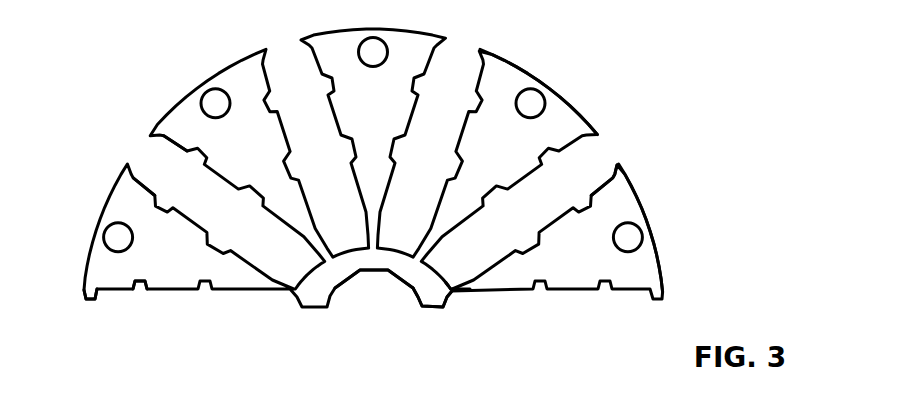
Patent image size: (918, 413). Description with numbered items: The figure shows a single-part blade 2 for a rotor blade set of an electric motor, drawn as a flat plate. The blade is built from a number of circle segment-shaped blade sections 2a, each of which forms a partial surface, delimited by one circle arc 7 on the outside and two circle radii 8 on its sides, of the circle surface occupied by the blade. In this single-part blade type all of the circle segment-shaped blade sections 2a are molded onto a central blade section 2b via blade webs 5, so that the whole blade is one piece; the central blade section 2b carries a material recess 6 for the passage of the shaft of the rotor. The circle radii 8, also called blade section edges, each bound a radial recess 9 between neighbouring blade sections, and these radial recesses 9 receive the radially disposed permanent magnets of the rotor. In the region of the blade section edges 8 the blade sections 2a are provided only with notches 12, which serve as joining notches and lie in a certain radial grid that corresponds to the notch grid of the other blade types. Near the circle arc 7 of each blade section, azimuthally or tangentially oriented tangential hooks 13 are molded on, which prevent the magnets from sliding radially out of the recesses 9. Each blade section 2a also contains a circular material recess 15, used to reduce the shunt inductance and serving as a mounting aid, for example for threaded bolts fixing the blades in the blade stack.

The single-part blade 2 is at (683, 108).
The circle segment-shaped blade section 2a is at (666, 256).
The central blade section 2b is at (430, 307).
The blade web 5 is at (456, 297).
The material recess 6 is at (373, 306).
The circle arc 7 is at (523, 65).
The circle radius 8 is at (590, 184).
The radial recess 9 is at (164, 174).
The notch 12 is at (138, 292).
The tangential hook 13 is at (90, 299).
The circular material recess 15 is at (113, 233).